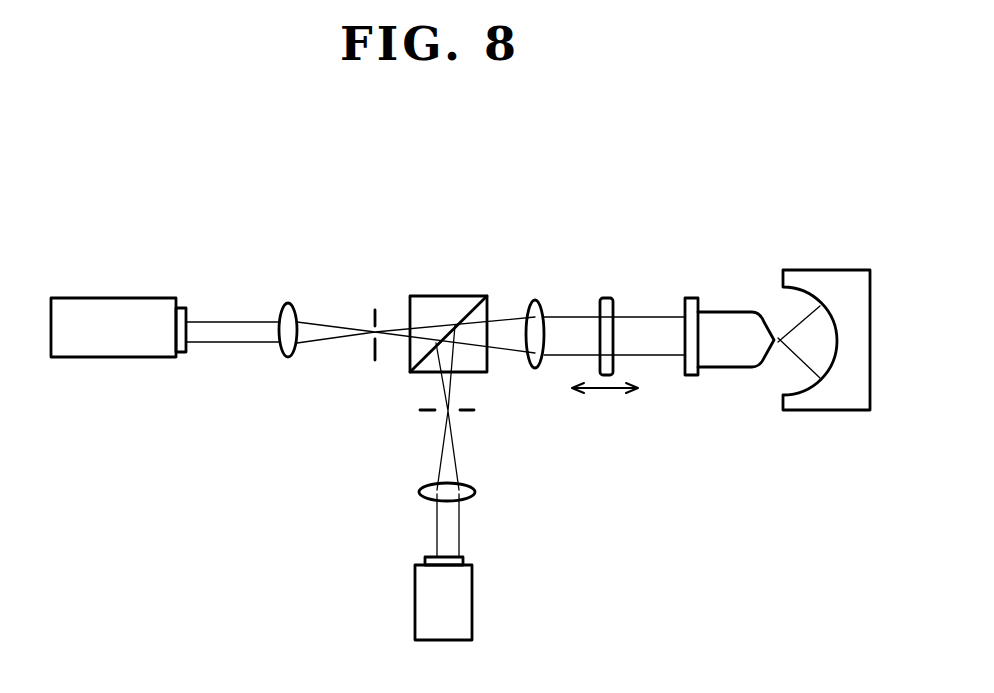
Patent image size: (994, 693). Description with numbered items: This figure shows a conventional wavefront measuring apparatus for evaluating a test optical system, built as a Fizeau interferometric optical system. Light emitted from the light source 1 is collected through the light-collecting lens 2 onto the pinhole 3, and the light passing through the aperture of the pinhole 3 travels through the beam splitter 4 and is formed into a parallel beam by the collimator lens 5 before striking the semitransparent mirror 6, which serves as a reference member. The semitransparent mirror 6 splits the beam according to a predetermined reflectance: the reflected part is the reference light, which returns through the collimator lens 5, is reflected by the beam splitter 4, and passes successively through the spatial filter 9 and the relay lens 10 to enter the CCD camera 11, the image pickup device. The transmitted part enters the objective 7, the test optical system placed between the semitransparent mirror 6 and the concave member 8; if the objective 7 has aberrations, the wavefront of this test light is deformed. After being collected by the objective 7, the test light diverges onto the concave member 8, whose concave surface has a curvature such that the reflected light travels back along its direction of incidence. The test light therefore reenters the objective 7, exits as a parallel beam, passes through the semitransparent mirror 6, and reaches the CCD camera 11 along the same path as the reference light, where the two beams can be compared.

The light source 1 is at (116, 315).
The light-collecting lens 2 is at (290, 300).
The pinhole 3 is at (375, 310).
The beam splitter 4 is at (450, 307).
The collimator lens 5 is at (535, 298).
The semitransparent mirror 6 is at (609, 298).
The objective 7 is at (730, 316).
The concave member 8 is at (838, 285).
The spatial filter 9 is at (470, 410).
The relay lens 10 is at (475, 492).
The CCD camera 11 is at (460, 600).